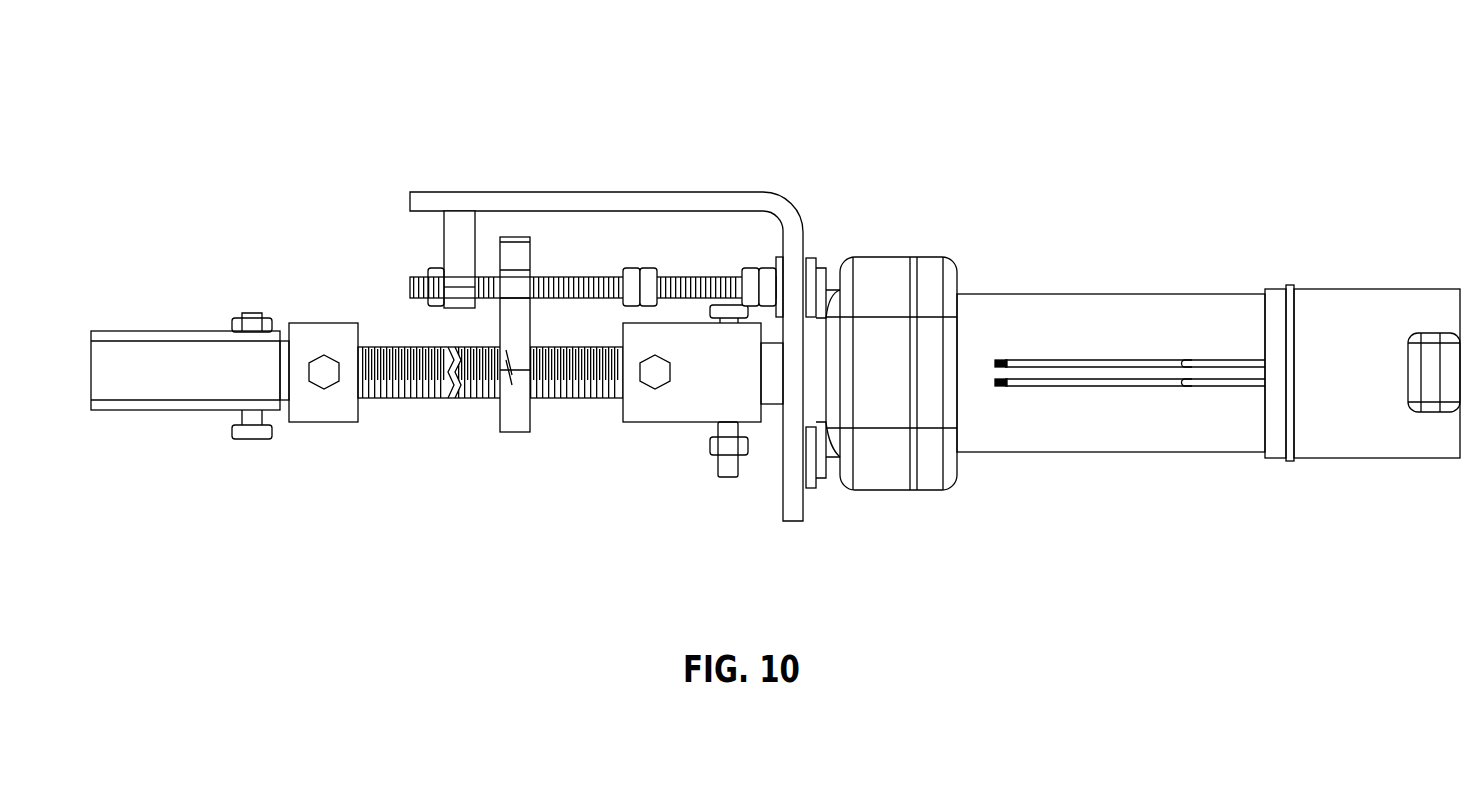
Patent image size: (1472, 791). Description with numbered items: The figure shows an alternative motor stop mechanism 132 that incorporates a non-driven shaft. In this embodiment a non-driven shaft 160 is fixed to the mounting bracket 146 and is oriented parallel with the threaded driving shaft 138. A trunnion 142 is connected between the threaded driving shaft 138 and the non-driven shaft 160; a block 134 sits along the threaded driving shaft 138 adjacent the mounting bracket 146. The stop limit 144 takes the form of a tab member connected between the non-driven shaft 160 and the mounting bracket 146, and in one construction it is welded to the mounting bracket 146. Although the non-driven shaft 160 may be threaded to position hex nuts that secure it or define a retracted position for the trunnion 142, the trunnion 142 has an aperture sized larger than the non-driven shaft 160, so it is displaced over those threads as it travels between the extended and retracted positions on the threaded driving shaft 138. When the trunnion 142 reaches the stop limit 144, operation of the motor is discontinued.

The motor stop mechanism 132 is at (805, 150).
The connector block 134 is at (695, 397).
The threaded driving shaft 138 is at (452, 400).
The trunnion 142 is at (517, 250).
The stop limit 144 is at (458, 249).
The mounting bracket 146 is at (788, 212).
The non-driven shaft 160 is at (572, 275).